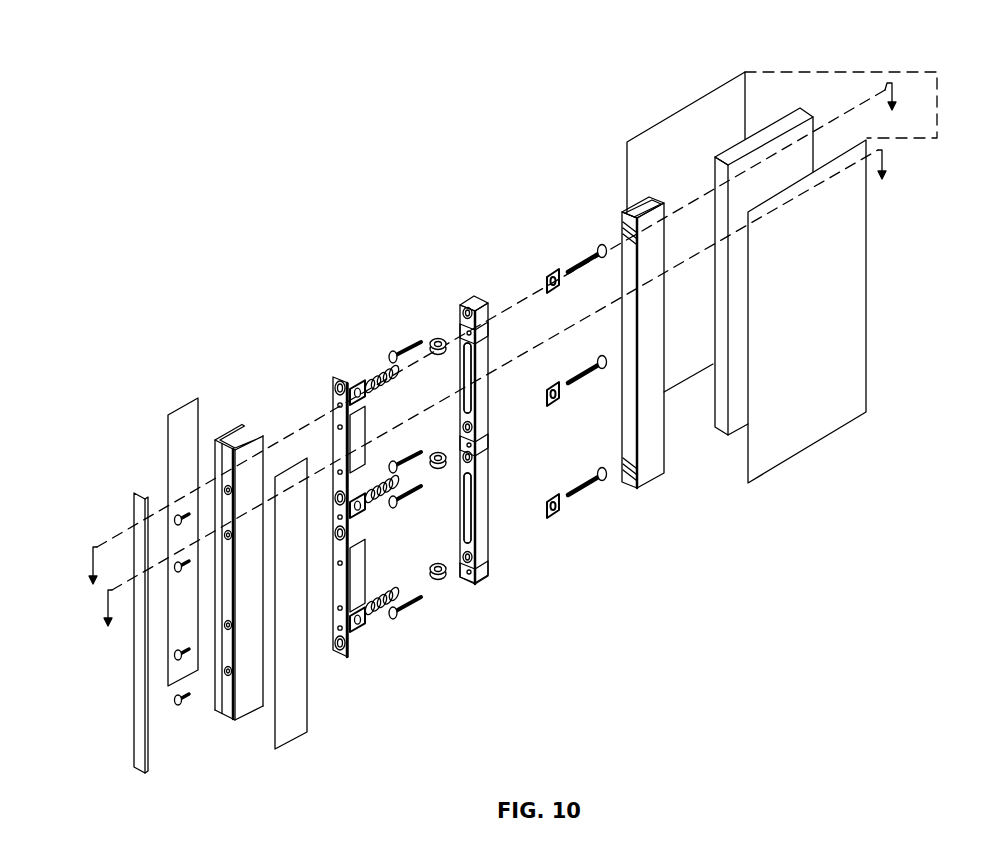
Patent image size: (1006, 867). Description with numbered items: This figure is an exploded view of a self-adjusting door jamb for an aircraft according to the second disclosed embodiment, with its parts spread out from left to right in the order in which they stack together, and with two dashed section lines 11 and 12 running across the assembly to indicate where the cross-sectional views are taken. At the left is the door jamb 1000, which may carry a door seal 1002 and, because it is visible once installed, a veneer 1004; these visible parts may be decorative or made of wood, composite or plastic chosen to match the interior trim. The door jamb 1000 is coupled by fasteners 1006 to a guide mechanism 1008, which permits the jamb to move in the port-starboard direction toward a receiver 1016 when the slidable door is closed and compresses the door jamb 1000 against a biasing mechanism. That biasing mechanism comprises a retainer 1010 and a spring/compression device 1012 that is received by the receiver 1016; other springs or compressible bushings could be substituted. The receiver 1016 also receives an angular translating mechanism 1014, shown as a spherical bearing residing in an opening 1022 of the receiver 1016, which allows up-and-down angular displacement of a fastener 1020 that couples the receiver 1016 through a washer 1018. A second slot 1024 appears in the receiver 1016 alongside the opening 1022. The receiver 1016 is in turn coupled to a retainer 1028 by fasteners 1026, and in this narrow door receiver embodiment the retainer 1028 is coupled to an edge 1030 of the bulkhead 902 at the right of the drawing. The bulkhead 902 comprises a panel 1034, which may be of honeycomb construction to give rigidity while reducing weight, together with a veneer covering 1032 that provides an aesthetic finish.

The section line 11- 11 is at (493, 345).
The section line 12- 12 is at (496, 402).
The bulkhead 902 is at (938, 72).
The door jamb 1000 is at (237, 430).
The door seal 1002 is at (148, 750).
The veneer 1004 is at (297, 712).
The fasteners 1006 is at (188, 699).
The guide mechanism 1008 is at (359, 553).
The retainer 1010 is at (357, 388).
The spring/compression device 1012 is at (372, 376).
The angular translating mechanism 1014 is at (436, 332).
The receiver 1016 is at (492, 400).
The washer 1018 is at (547, 278).
The fastener 1020 is at (587, 258).
The opening 1022 is at (454, 438).
The slot 1024 is at (460, 376).
The fasteners 1026 is at (413, 494).
The retainer 1028 is at (648, 198).
The edge 1030 is at (719, 171).
The veneer covering 1032 is at (853, 282).
The panel 1034 is at (770, 128).